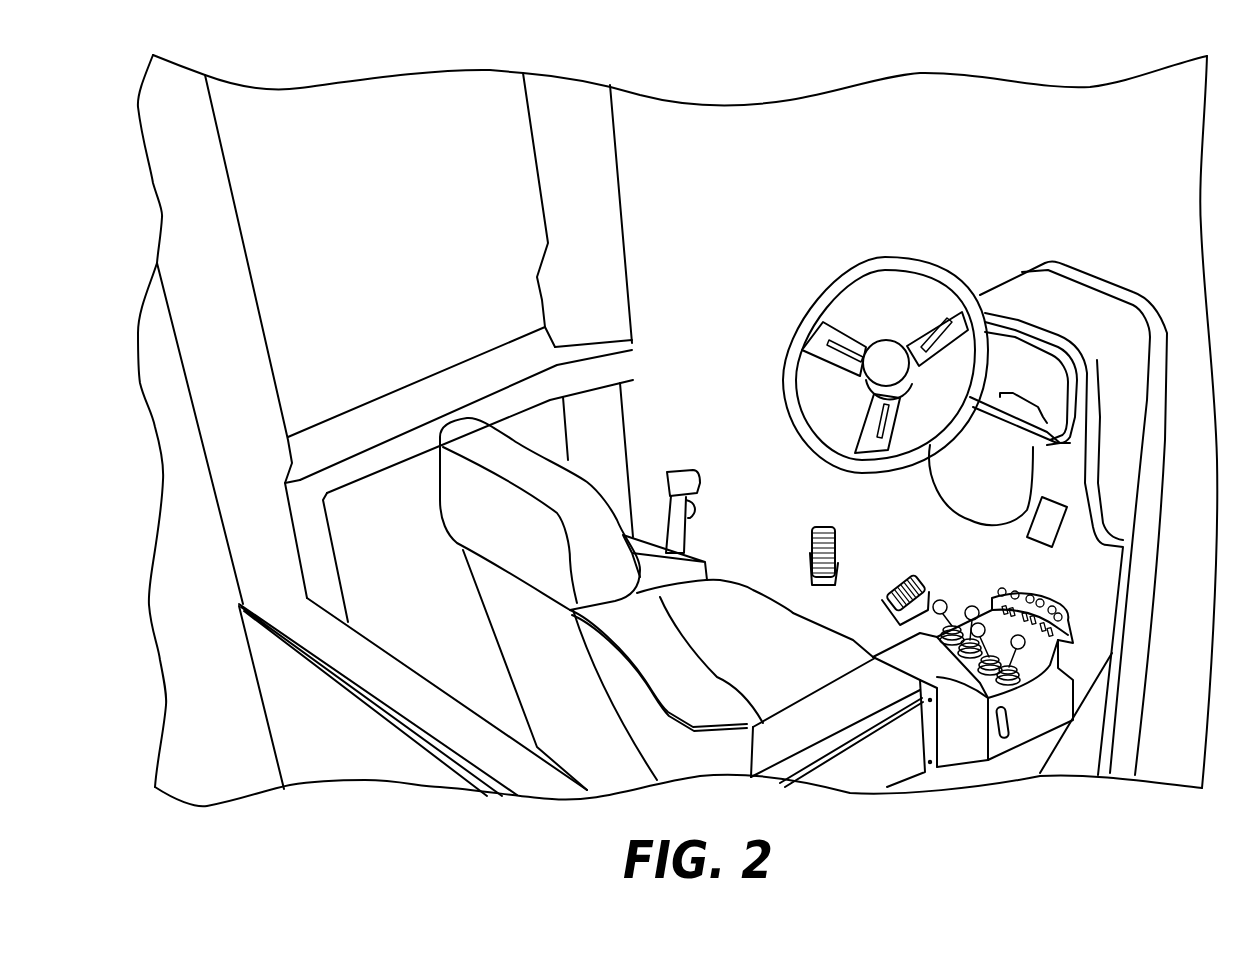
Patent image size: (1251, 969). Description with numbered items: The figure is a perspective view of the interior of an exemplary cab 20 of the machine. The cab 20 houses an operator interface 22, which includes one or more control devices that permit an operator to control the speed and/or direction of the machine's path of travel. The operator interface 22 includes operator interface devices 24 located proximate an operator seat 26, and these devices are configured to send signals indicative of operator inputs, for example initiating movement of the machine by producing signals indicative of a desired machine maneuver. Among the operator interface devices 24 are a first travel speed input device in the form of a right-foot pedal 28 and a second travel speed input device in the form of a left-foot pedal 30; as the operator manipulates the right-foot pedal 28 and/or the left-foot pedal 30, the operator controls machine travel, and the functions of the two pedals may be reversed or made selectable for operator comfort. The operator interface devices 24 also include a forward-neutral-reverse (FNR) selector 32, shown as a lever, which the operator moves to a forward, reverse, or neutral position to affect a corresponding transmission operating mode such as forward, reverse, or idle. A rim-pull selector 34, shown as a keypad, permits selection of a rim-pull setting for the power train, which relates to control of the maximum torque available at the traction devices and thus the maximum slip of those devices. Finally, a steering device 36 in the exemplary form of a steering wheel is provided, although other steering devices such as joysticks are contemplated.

The cab 20 is at (583, 115).
The operator interface 22 is at (1150, 170).
The operator interface devices 24 is at (884, 355).
The operator seat 26 is at (580, 498).
The right-foot pedal 28 is at (888, 592).
The left-foot pedal 30 is at (810, 548).
The forward-neutral-reverse (FNR) selector 32 is at (947, 605).
The rim-pull selector 34 is at (1055, 523).
The steering device 36 is at (913, 265).